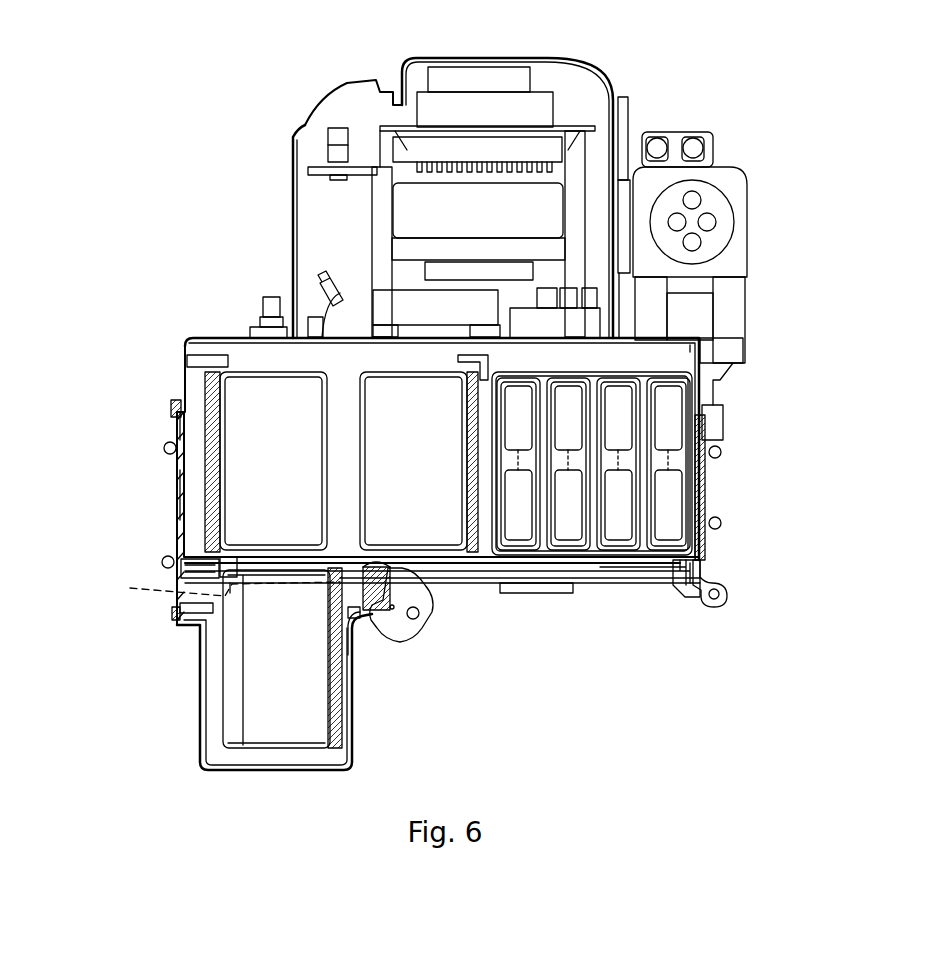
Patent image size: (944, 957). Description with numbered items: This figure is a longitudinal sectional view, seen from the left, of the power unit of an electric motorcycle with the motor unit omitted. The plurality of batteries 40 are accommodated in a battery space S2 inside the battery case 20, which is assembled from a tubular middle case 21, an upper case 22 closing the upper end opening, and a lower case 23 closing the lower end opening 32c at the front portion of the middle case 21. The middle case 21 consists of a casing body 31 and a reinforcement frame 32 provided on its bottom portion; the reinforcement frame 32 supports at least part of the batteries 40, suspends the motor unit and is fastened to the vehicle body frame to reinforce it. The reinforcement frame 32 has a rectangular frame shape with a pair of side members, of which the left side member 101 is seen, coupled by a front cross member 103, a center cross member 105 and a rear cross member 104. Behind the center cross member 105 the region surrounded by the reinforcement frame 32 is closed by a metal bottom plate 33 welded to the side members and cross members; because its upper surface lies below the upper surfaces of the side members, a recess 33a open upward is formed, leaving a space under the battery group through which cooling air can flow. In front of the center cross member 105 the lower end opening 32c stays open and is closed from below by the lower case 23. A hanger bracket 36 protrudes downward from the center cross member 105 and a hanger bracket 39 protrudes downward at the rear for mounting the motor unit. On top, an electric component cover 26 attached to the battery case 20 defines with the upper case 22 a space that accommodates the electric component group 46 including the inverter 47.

The battery case 20 is at (172, 312).
The middle case 21 is at (180, 434).
The upper case 22 is at (184, 364).
The lower case 23 is at (200, 698).
The electric component cover 26 is at (293, 150).
The casing body 31 is at (180, 496).
The reinforcement frame 32 is at (575, 583).
The lower end opening 32c is at (212, 587).
The bottom plate 33 is at (607, 574).
The recess 33a is at (648, 563).
The hanger bracket 36 is at (403, 627).
The hanger bracket 39 is at (722, 587).
The battery 40 is at (262, 392).
The electric component group 46 is at (596, 175).
The inverter 47 is at (415, 212).
The side member 101 is at (467, 584).
The front cross member 103 is at (187, 557).
The rear cross member 104 is at (687, 603).
The center cross member 105 is at (358, 617).
The battery space S2 is at (683, 351).